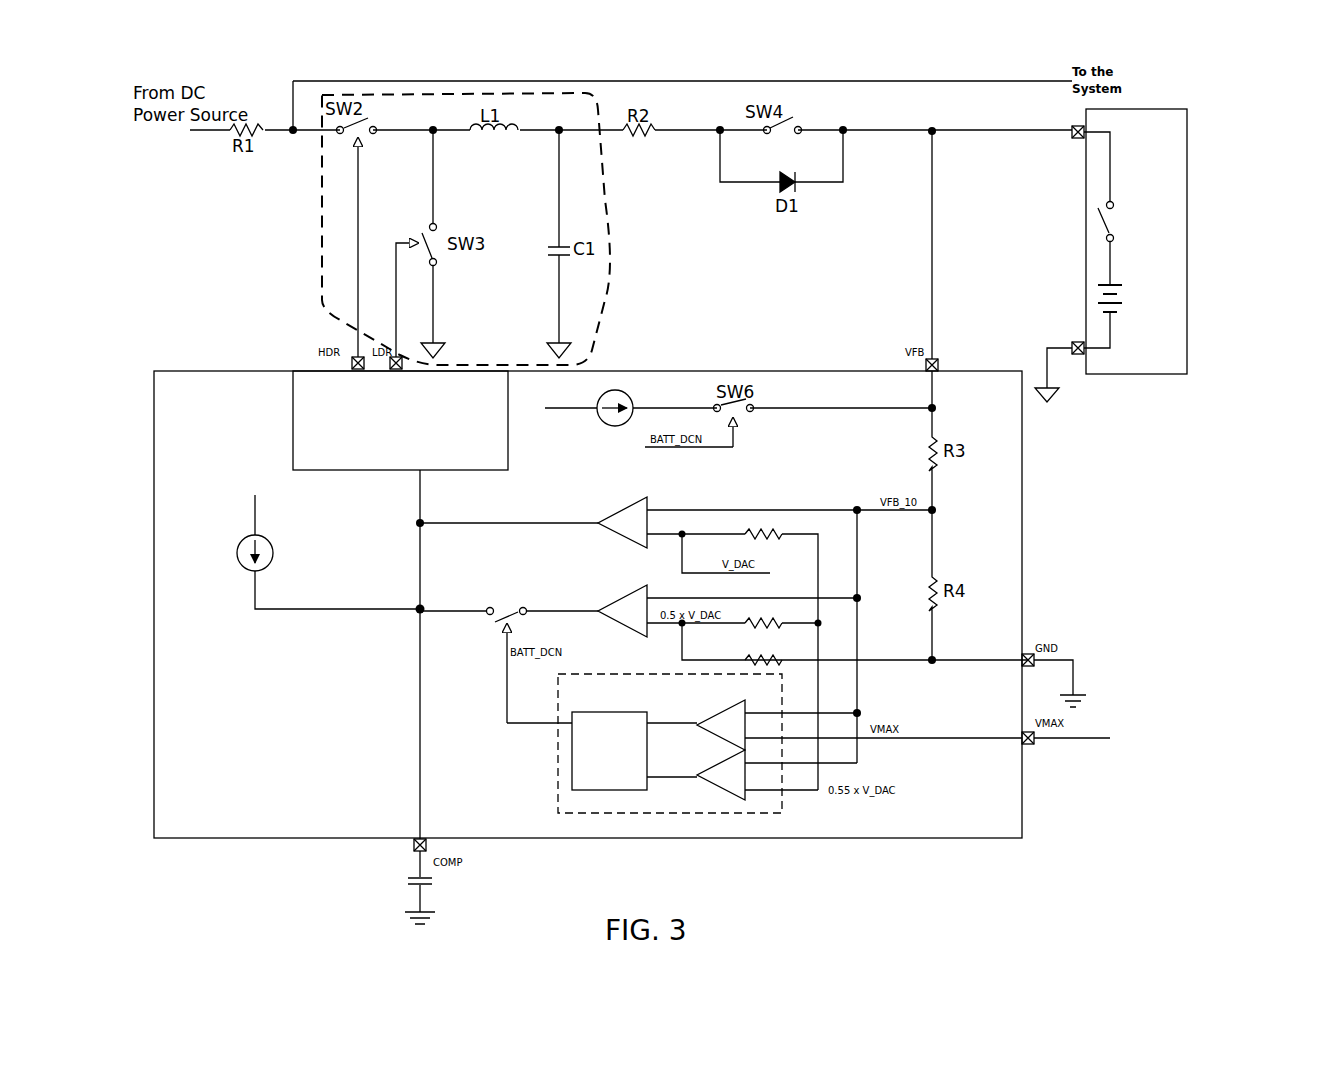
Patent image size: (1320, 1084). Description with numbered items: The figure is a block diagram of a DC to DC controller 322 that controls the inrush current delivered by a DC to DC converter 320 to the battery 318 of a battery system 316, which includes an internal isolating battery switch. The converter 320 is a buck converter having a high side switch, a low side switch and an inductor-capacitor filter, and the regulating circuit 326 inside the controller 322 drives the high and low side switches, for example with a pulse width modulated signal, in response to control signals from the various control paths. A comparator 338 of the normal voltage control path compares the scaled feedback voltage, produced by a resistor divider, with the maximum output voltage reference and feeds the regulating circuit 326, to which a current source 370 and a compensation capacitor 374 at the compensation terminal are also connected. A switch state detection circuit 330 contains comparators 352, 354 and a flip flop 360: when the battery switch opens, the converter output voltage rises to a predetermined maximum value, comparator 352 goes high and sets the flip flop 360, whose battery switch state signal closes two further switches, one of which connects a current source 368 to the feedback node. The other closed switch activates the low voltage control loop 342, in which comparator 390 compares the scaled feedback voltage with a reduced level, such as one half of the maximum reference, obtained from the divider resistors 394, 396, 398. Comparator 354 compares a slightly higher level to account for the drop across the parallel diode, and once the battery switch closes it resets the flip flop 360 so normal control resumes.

The battery system 316 is at (1152, 255).
The battery 318 is at (1124, 278).
The DC to DC converter 320 is at (322, 238).
The DC to DC controller 322 is at (1022, 475).
The regulating circuit 326 is at (293, 406).
The switch state detection circuit 330 is at (782, 813).
The comparator 338 is at (628, 508).
The low voltage control loop 342 is at (576, 590).
The comparator 352 is at (724, 713).
The comparator 354 is at (722, 792).
The flip flop 360 is at (572, 762).
The current source 368 is at (600, 421).
The compensation current source 370 is at (237, 553).
The compensation capacitor 374 is at (396, 883).
The comparator 390 is at (630, 598).
The resistor 394 is at (745, 530).
The resistor 396 is at (795, 618).
The resistor 398 is at (805, 655).